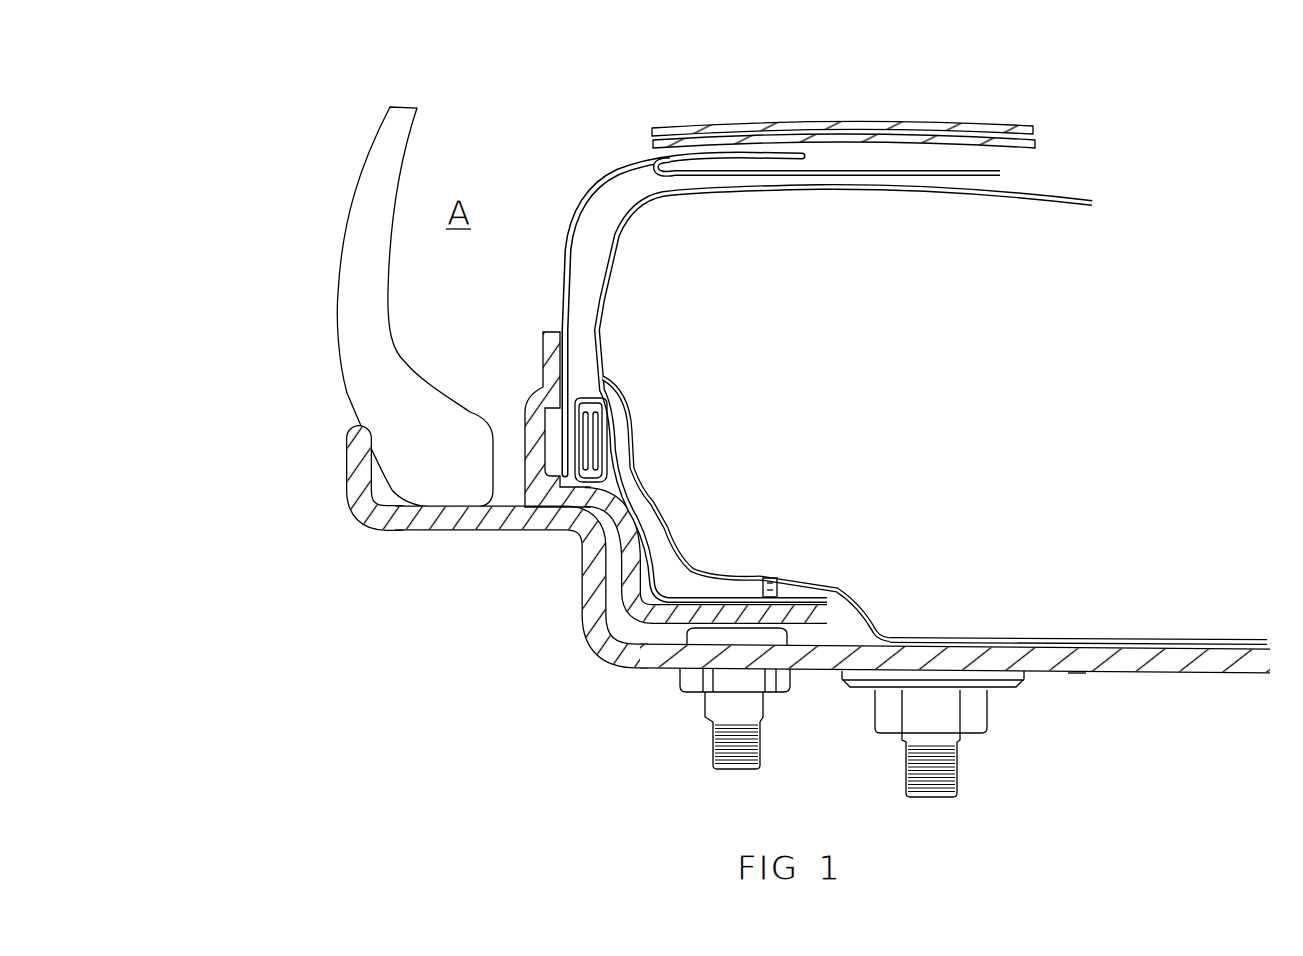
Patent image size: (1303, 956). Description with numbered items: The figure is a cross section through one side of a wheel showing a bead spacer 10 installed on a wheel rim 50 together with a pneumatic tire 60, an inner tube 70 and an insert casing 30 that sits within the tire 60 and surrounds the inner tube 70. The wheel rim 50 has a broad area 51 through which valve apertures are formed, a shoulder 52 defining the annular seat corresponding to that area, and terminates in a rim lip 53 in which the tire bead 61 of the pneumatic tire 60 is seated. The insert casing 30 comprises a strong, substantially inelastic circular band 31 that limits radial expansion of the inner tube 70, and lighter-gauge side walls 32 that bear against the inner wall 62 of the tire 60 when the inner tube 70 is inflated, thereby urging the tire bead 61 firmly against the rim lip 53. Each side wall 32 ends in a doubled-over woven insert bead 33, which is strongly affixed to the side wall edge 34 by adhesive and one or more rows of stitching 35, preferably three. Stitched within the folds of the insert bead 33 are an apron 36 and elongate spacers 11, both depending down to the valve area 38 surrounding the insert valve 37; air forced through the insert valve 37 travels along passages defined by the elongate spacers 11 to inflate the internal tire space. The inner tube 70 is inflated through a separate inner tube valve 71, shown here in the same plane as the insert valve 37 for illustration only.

The bead spacer 10 is at (758, 331).
The elongate spacers 11 is at (738, 613).
The insert casing 30 is at (843, 88).
The circular band 31 is at (772, 127).
The side walls 32 is at (593, 187).
The insert bead 33 is at (585, 484).
The side wall edge 34 is at (563, 430).
The stitching 35 is at (547, 448).
The apron 36 is at (647, 523).
The insert valve 37 is at (738, 705).
The valve area 38 is at (767, 580).
The wheel rim 50 is at (1174, 680).
The broad area 51 is at (1077, 683).
The shoulder 52 is at (580, 612).
The rim lip 53 is at (363, 490).
The pneumatic tire 60 is at (348, 307).
The tire bead 61 is at (457, 445).
The inner wall 62 is at (403, 357).
The inner tube 70 is at (1063, 642).
The inner tube valve 71 is at (940, 725).